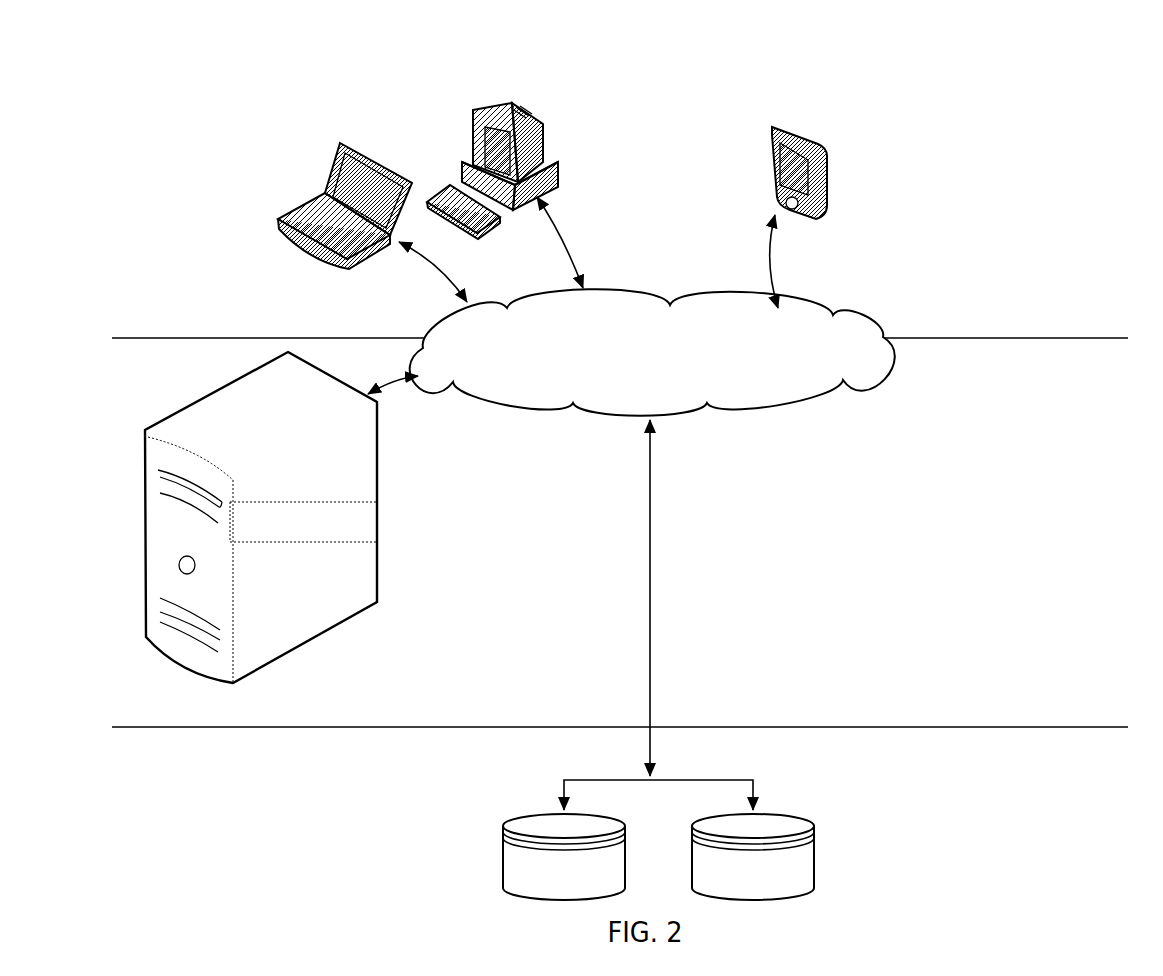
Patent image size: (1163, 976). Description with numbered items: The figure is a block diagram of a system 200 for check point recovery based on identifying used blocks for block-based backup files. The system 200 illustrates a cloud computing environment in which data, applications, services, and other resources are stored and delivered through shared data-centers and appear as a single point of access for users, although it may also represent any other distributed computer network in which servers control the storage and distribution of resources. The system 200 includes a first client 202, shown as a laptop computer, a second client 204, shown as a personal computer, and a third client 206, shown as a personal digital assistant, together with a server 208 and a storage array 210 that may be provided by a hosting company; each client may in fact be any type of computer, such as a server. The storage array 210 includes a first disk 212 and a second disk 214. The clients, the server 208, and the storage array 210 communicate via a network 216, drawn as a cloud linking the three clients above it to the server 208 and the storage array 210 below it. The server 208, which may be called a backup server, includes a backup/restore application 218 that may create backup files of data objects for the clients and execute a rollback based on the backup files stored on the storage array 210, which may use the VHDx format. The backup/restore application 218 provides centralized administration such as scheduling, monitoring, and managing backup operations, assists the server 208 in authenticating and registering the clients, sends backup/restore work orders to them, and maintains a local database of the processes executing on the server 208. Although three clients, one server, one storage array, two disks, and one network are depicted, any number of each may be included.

The system 200 is at (619, 117).
The first client 202 is at (338, 145).
The second client 204 is at (475, 108).
The third client 206 is at (796, 125).
The server 208 is at (146, 600).
The storage array 210 is at (789, 831).
The first disk 212 is at (520, 818).
The second disk 214 is at (703, 820).
The network 216 is at (652, 352).
The backup/restore application 218 is at (303, 522).